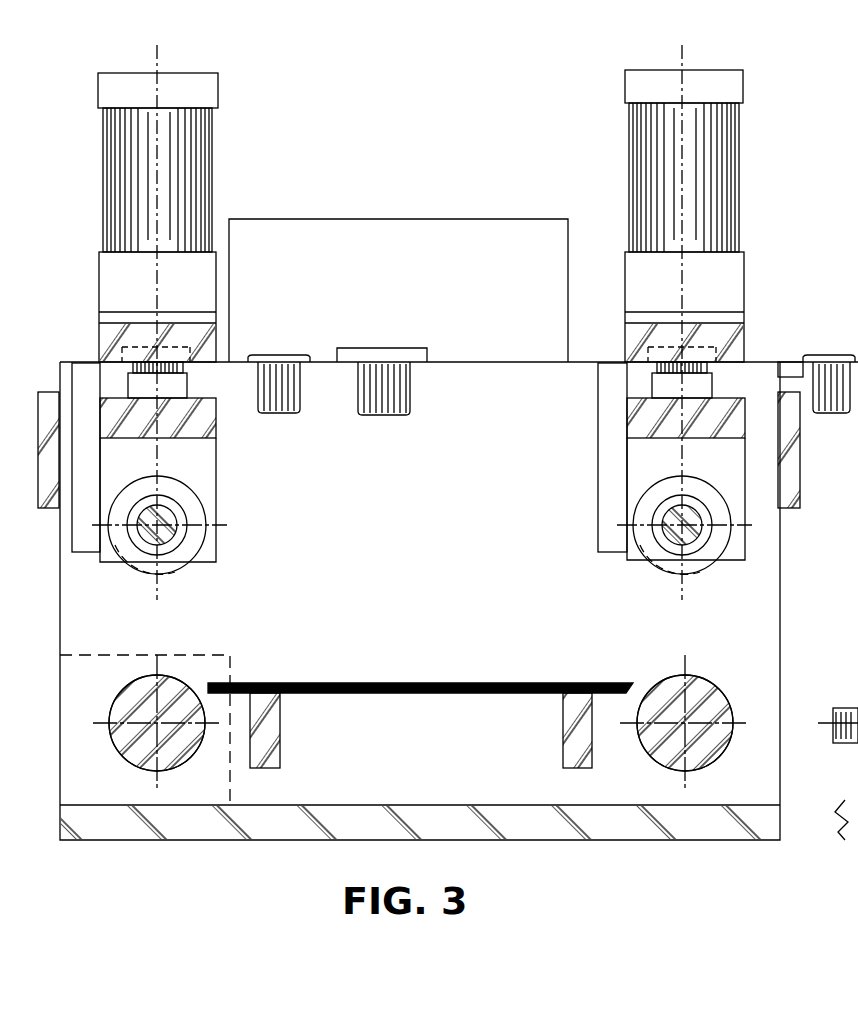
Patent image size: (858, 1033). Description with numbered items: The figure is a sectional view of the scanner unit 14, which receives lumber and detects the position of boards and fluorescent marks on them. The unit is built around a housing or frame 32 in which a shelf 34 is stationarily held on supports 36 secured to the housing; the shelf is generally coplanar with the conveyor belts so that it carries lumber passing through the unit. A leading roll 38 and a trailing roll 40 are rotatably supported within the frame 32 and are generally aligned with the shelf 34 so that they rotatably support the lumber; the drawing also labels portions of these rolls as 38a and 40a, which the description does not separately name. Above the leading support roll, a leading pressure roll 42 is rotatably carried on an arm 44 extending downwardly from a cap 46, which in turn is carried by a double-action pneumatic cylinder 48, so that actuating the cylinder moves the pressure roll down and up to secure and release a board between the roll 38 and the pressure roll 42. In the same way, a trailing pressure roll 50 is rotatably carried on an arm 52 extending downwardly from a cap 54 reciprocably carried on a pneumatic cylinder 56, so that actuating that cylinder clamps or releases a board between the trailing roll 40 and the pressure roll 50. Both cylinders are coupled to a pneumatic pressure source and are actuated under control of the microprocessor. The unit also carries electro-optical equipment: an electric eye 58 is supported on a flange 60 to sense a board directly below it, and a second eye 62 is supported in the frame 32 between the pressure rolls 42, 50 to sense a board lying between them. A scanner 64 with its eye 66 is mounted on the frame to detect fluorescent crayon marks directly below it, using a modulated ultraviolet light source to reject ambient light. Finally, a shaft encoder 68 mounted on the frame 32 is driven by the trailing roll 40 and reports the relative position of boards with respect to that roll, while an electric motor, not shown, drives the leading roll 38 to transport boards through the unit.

The scanner unit 14 is at (437, 130).
The housing or frame 32 is at (784, 643).
The shelf 34 is at (375, 688).
The supports 36 is at (268, 750).
The leading roll 38 is at (700, 695).
The right guide rod portion 38a is at (648, 690).
The trailing roll 40 is at (143, 695).
The left guide rod portion 40a is at (173, 677).
The leading pressure roll 42 is at (677, 567).
The arm 44 is at (686, 499).
The cap 46 is at (628, 418).
The pneumatic cylinder 48 is at (746, 178).
The trailing pressure roll 50 is at (172, 567).
The arm 52 is at (158, 500).
The cap 54 is at (206, 420).
The pneumatic cylinder 56 is at (216, 178).
The electric eye 58 is at (826, 355).
The flange 60 is at (786, 362).
The eye 62 is at (398, 415).
The scanner 64 is at (398, 290).
The eye 66 is at (300, 412).
The shaft encoder 68 is at (77, 674).